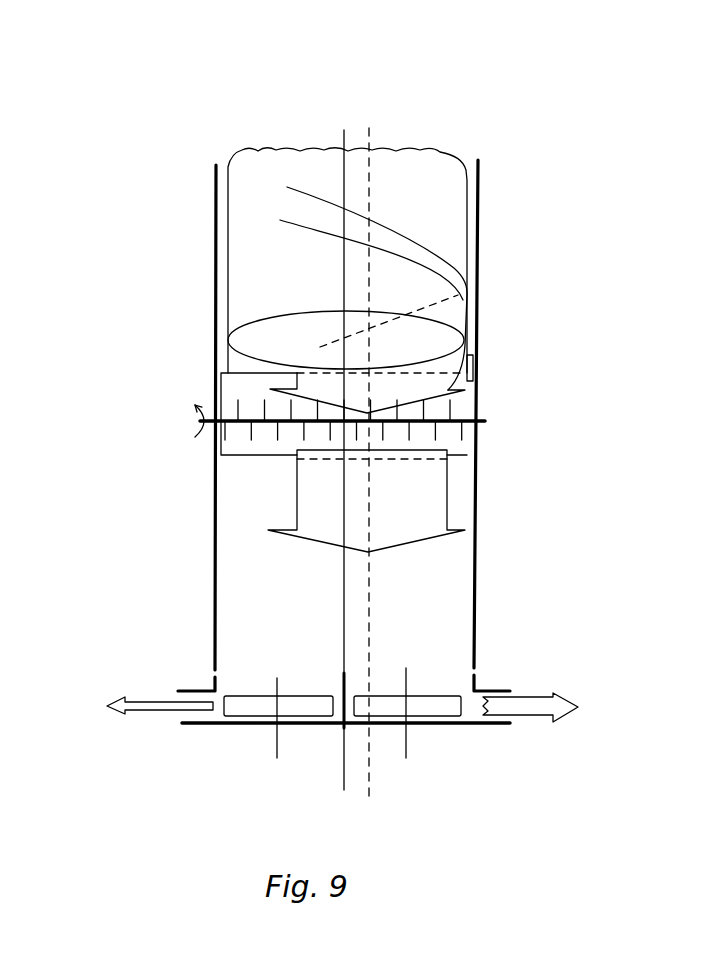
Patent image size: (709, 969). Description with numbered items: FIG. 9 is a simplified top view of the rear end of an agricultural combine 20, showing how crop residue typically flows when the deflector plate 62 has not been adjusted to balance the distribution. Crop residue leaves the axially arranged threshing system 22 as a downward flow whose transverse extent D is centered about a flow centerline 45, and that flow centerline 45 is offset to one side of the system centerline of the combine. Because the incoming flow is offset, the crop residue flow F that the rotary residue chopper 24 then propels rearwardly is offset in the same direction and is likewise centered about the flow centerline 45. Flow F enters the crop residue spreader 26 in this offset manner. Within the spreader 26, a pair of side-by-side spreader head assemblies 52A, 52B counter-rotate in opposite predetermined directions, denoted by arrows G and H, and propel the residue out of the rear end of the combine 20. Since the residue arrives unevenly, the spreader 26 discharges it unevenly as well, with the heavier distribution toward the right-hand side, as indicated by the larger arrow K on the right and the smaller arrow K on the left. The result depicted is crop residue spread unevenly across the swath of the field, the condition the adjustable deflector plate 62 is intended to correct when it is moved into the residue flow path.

The agricultural combine 20 is at (483, 100).
The threshing system 22 is at (449, 169).
The rotary residue chopper 24 is at (243, 442).
The crop residue spreader 26 is at (502, 671).
The flow centerline 45 is at (371, 133).
The spreader head assembly 52A is at (262, 695).
The spreader head assembly 52B is at (435, 693).
The adjustable deflector plate 62 is at (473, 348).
The flow extent D is at (323, 385).
The crop residue flow F is at (448, 498).
The rotational direction arrow G is at (296, 742).
The rotational direction arrow H is at (392, 743).
The spread distribution arrow K is at (143, 700).